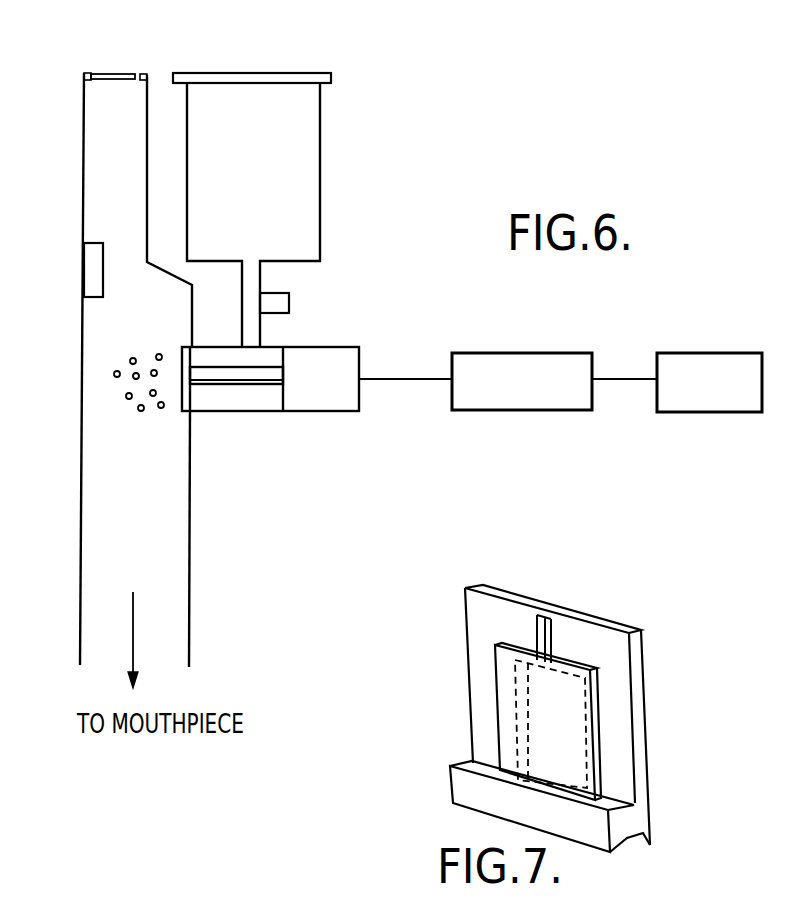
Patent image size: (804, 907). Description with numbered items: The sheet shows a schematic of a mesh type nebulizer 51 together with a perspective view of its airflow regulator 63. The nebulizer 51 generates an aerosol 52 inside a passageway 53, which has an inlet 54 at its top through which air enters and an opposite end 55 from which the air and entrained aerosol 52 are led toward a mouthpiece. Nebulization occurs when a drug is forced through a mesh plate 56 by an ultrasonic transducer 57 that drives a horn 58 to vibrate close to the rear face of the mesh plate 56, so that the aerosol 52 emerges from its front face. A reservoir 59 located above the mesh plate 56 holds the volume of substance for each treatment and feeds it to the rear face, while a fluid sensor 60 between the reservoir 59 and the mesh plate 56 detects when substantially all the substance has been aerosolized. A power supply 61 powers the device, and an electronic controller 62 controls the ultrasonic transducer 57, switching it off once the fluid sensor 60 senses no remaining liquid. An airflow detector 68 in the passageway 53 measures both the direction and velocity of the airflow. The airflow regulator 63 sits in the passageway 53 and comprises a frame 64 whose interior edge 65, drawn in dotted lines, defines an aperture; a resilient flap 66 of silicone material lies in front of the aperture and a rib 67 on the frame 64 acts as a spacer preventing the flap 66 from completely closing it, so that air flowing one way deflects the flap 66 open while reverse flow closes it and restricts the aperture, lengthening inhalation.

In FIG. 6, the mesh type nebulizer 51 is at (427, 64).
In FIG. 6, the aerosol 52 is at (130, 383).
In FIG. 6, the passageway 53 is at (84, 187).
In FIG. 6, the inlet 54 is at (111, 110).
In FIG. 6, the opposite end 55 is at (124, 668).
In FIG. 6, the mesh plate 56 is at (187, 413).
In FIG. 6, the ultrasonic transducer 57 is at (334, 388).
In FIG. 6, the horn 58 is at (250, 376).
In FIG. 6, the reservoir 59 is at (320, 205).
In FIG. 6, the fluid sensor 60 is at (289, 303).
In FIG. 6, the power supply 61 is at (707, 413).
In FIG. 6, the electronic controller 62 is at (519, 411).
In FIG. 6, the airflow regulator 63 is at (106, 72).
In FIG. 7, the airflow regulator 63 is at (616, 586).
In FIG. 7, the frame 64 is at (615, 682).
In FIG. 7, the interior edge 65 is at (518, 693).
In FIG. 7, the resilient flap 66 is at (595, 737).
In FIG. 7, the rib 67 is at (547, 647).
In FIG. 6, the airflow detector 68 is at (90, 270).